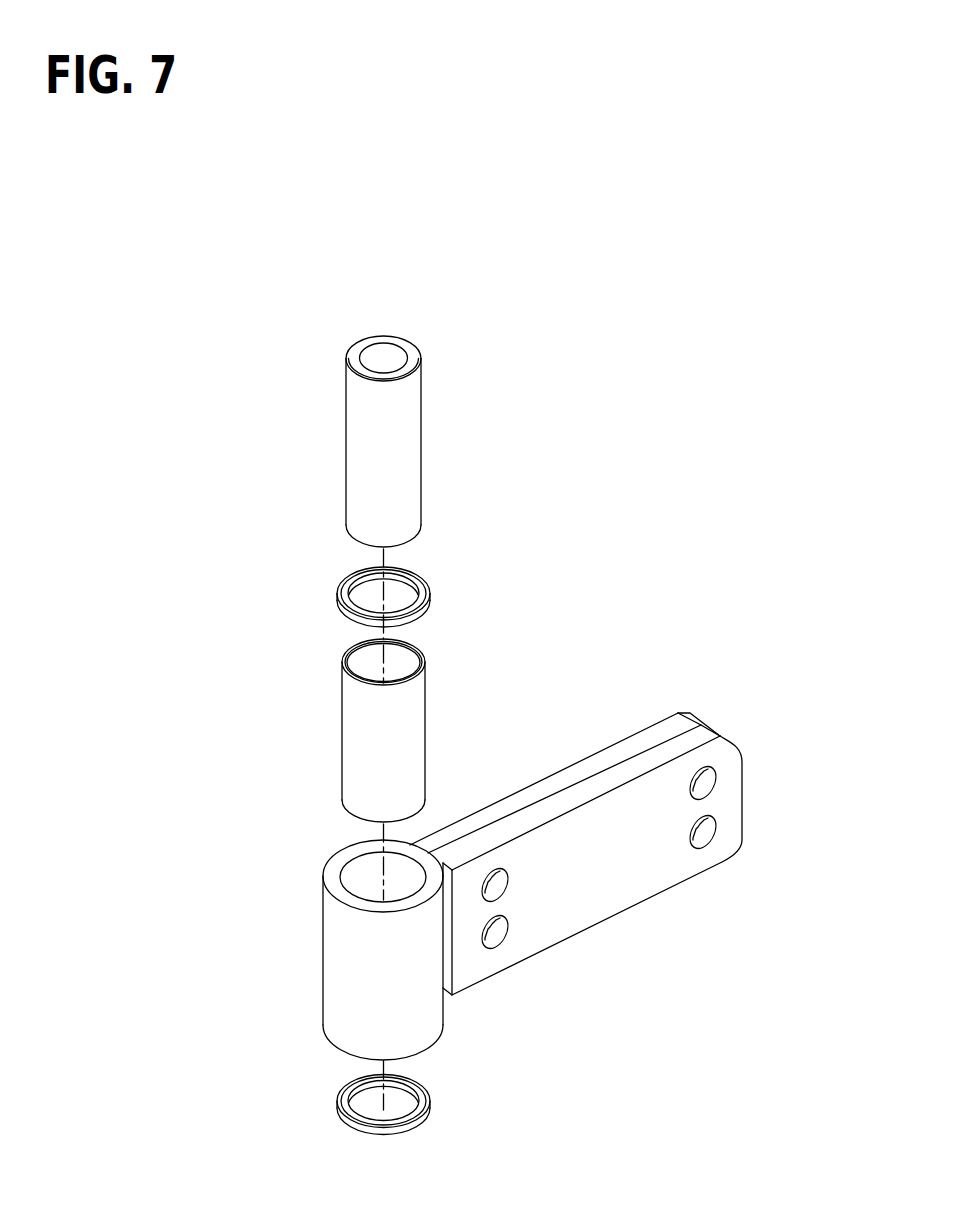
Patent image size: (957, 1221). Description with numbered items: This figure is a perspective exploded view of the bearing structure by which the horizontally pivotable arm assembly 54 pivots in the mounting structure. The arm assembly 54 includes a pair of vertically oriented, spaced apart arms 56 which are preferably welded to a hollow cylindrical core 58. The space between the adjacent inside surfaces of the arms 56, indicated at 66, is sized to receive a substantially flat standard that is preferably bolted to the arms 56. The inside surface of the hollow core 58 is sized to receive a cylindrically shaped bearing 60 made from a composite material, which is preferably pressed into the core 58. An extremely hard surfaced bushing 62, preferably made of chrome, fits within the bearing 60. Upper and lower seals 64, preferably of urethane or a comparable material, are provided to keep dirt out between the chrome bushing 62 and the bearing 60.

The arm assembly 54 is at (505, 847).
The arms 56 is at (625, 814).
The hollow cylindrical core 58 is at (338, 970).
The bearing 60 is at (360, 737).
The bushing 62 is at (359, 443).
The seals 64 is at (338, 597).
The space between the arms 66 is at (698, 727).